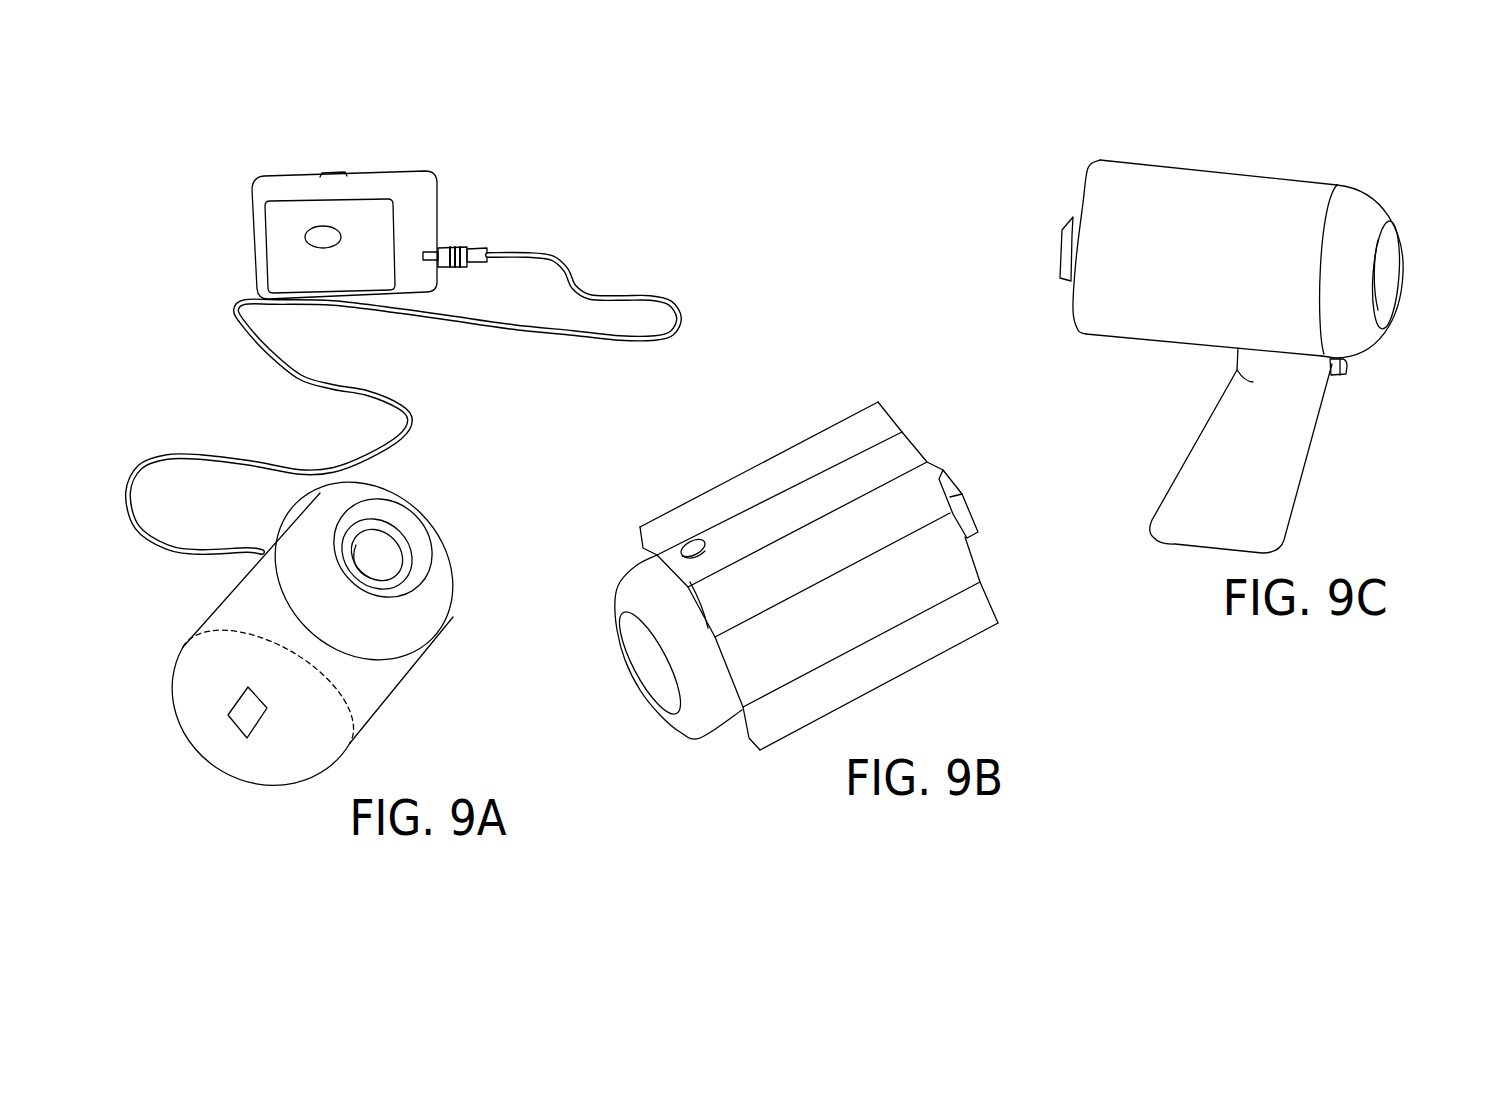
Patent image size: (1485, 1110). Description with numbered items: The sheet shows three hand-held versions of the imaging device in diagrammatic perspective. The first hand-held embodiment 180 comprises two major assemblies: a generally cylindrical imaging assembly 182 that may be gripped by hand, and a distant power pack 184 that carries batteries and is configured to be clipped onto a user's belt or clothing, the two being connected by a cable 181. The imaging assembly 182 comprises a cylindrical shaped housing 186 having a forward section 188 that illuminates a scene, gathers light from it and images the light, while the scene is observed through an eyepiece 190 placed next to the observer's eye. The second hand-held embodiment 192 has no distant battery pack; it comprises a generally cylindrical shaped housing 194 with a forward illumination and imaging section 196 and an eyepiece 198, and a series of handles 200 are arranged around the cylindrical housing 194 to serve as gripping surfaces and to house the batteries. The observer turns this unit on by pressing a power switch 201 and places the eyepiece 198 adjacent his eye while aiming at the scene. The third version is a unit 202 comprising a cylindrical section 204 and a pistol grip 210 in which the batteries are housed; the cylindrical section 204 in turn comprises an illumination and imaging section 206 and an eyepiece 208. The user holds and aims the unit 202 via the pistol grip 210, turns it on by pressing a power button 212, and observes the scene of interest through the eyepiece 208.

In FIG. 9A, the hand-held embodiment 180 is at (608, 225).
In FIG. 9A, the cable 181 is at (660, 298).
In FIG. 9A, the imaging assembly 182 is at (418, 706).
In FIG. 9A, the power pack 184 is at (385, 172).
In FIG. 9A, the cylindrical shaped housing 186 is at (250, 598).
In FIG. 9A, the forward section 188 is at (443, 583).
In FIG. 9A, the eyepiece 190 is at (244, 716).
In FIG. 9B, the hand-held embodiment 192 is at (846, 392).
In FIG. 9B, the cylindrical shaped housing 194 is at (890, 452).
In FIG. 9B, the forward illumination and imaging section 196 is at (698, 725).
In FIG. 9B, the eyepiece 198 is at (967, 523).
In FIG. 9B, the handles 200 is at (733, 493).
In FIG. 9B, the power switch 201 is at (688, 545).
In FIG. 9C, the unit 202 is at (1246, 140).
In FIG. 9C, the cylindrical section 204 is at (1120, 178).
In FIG. 9C, the illumination and imaging section 206 is at (1325, 187).
In FIG. 9C, the eyepiece 208 is at (1060, 250).
In FIG. 9C, the pistol grip 210 is at (1287, 450).
In FIG. 9C, the power button 212 is at (1347, 366).